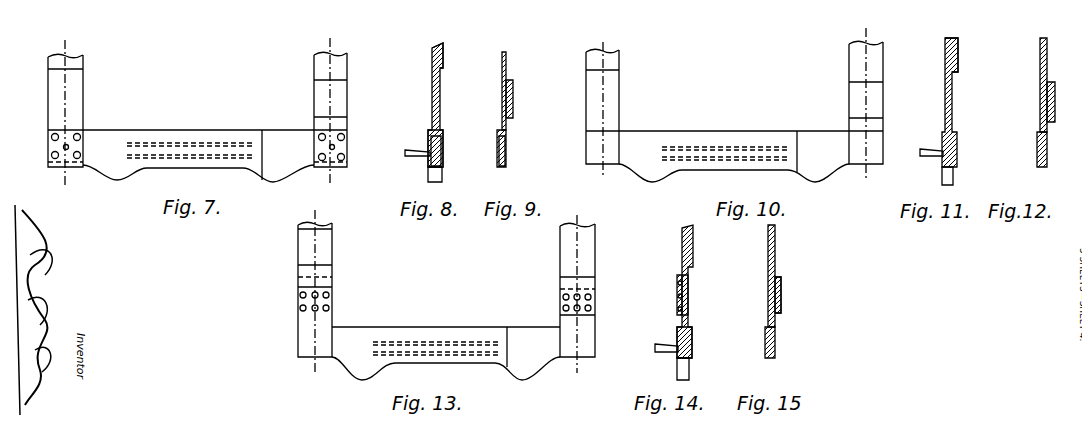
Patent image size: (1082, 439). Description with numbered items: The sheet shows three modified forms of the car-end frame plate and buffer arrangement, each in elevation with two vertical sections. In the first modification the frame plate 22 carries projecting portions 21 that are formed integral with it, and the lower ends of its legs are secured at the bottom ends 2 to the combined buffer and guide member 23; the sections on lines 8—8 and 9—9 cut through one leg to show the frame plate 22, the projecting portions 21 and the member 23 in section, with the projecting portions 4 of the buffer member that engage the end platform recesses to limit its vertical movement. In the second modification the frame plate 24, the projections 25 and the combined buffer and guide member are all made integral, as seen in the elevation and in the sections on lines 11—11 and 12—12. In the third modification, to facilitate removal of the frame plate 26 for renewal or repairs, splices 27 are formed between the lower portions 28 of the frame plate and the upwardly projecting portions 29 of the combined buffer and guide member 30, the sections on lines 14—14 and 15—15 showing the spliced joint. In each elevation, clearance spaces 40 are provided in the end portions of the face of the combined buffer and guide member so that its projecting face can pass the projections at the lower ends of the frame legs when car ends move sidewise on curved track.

In FIG. 7, the bottom ends 2 is at (50, 148).
In FIG. 8, the bottom ends 2 is at (443, 160).
In FIG. 9, the bottom ends 2 is at (508, 160).
In FIG. 7, the projecting portions 4 is at (230, 150).
In FIG. 8, the projecting portions 4 is at (413, 156).
In FIG. 10, the projecting portions 4 is at (733, 137).
In FIG. 11, the projecting portions 4 is at (926, 157).
In FIG. 13, the projecting portions 4 is at (463, 336).
In FIG. 14, the projecting portions 4 is at (663, 353).
In FIG. 7, the section line 8— 8 is at (65, 123).
In FIG. 7, the section line 9— 9 is at (330, 117).
In FIG. 10, the section line 11— 11 is at (604, 111).
In FIG. 10, the section line 12— 12 is at (864, 107).
In FIG. 13, the section line 14— 14 is at (314, 293).
In FIG. 13, the section line 15— 15 is at (576, 295).
In FIG. 7, the projecting portions 21 is at (80, 62).
In FIG. 8, the projecting portions 21 is at (443, 52).
In FIG. 9, the projecting portions 21 is at (513, 103).
In FIG. 7, the frame plate 22 is at (77, 108).
In FIG. 8, the frame plate 22 is at (440, 101).
In FIG. 9, the frame plate 22 is at (510, 57).
In FIG. 7, the combined buffer and guide member 23 is at (208, 136).
In FIG. 8, the combined buffer and guide member 23 is at (430, 140).
In FIG. 9, the combined buffer and guide member 23 is at (500, 140).
In FIG. 10, the frame plate 24 is at (608, 114).
In FIG. 11, the frame plate 24 is at (952, 100).
In FIG. 12, the frame plate 24 is at (1040, 50).
In FIG. 10, the projections 25 is at (612, 59).
In FIG. 11, the projections 25 is at (958, 50).
In FIG. 12, the projections 25 is at (1048, 100).
In FIG. 13, the frame plate 26 is at (590, 238).
In FIG. 14, the frame plate 26 is at (685, 235).
In FIG. 15, the frame plate 26 is at (775, 240).
In FIG. 13, the splices 27 is at (326, 295).
In FIG. 14, the splices 27 is at (680, 293).
In FIG. 13, the lower portions 28 is at (330, 308).
In FIG. 14, the lower portions 28 is at (678, 305).
In FIG. 15, the lower portions 28 is at (782, 308).
In FIG. 13, the upwardly projecting portions 29 is at (300, 295).
In FIG. 14, the upwardly projecting portions 29 is at (690, 288).
In FIG. 15, the upwardly projecting portions 29 is at (772, 295).
In FIG. 13, the combined buffer and guide member 30 is at (400, 333).
In FIG. 14, the combined buffer and guide member 30 is at (693, 345).
In FIG. 15, the combined buffer and guide member 30 is at (777, 345).
In FIG. 7, the clearance spaces 40 is at (262, 147).
In FIG. 10, the clearance spaces 40 is at (798, 150).
In FIG. 13, the clearance spaces 40 is at (509, 350).